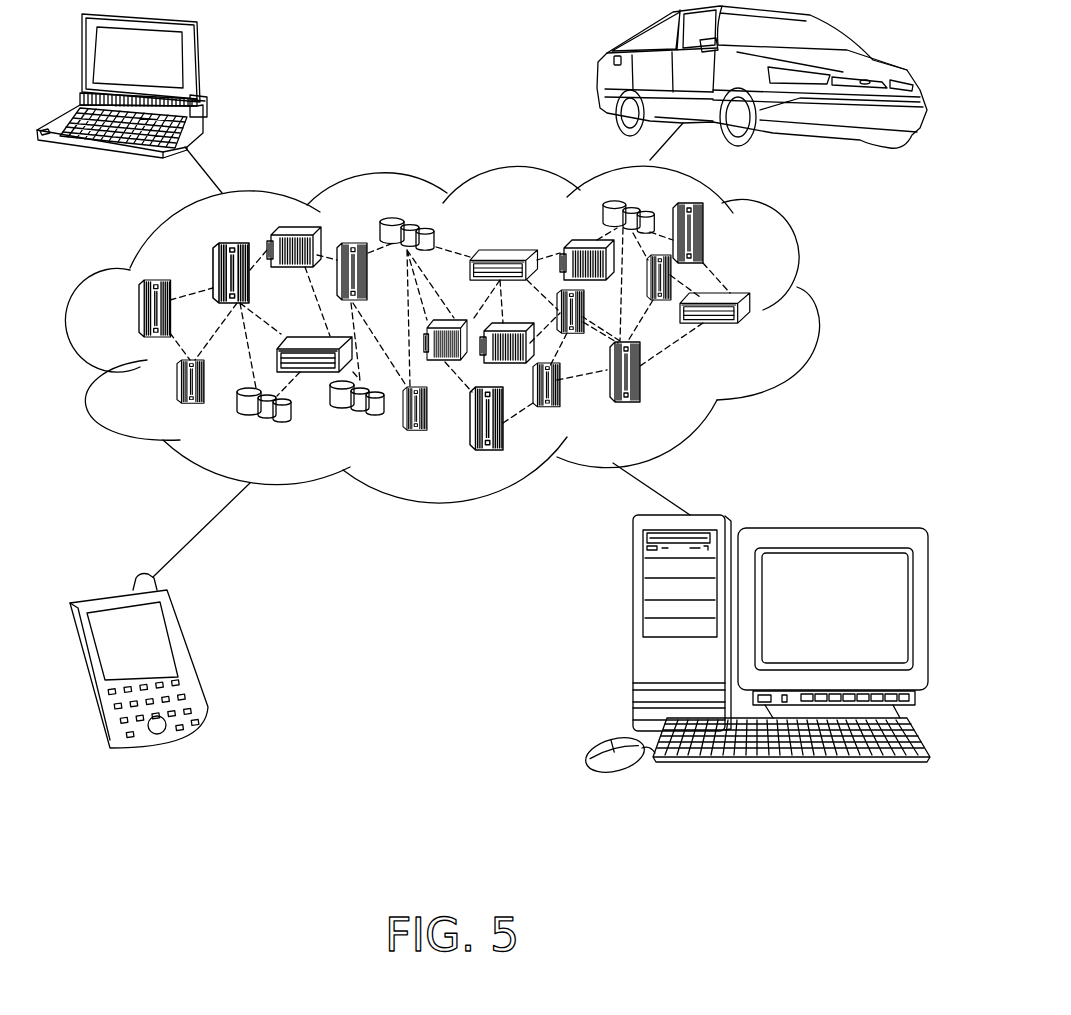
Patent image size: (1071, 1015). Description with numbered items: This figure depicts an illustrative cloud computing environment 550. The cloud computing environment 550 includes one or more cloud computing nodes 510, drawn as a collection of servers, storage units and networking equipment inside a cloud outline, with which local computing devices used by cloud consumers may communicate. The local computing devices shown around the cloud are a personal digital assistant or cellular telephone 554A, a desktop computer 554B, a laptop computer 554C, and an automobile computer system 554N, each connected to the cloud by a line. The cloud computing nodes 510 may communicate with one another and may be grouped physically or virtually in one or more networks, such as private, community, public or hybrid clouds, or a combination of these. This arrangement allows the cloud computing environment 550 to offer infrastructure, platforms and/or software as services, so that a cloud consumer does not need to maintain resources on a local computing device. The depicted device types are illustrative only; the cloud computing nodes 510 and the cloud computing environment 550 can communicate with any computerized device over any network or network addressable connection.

The cloud computing environment 550 is at (797, 270).
The cloud computing nodes 510 is at (770, 332).
The personal digital assistant (PDA) or cellular telephone 554A is at (190, 654).
The desktop computer 554B is at (633, 635).
The laptop computer 554C is at (200, 62).
The automobile computer system 554N is at (607, 64).